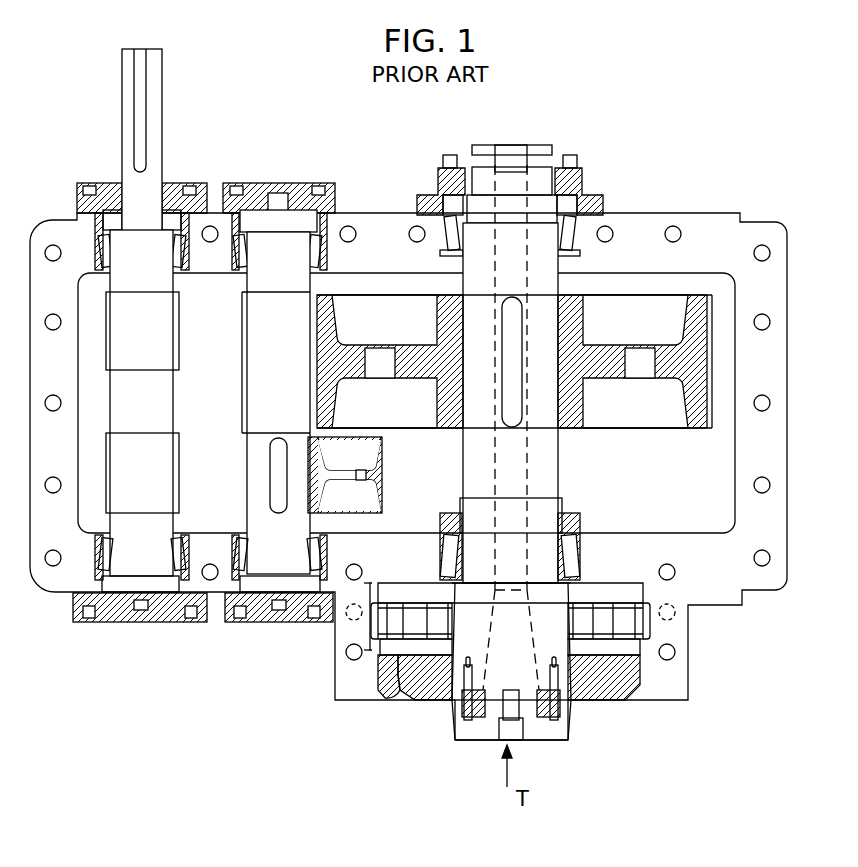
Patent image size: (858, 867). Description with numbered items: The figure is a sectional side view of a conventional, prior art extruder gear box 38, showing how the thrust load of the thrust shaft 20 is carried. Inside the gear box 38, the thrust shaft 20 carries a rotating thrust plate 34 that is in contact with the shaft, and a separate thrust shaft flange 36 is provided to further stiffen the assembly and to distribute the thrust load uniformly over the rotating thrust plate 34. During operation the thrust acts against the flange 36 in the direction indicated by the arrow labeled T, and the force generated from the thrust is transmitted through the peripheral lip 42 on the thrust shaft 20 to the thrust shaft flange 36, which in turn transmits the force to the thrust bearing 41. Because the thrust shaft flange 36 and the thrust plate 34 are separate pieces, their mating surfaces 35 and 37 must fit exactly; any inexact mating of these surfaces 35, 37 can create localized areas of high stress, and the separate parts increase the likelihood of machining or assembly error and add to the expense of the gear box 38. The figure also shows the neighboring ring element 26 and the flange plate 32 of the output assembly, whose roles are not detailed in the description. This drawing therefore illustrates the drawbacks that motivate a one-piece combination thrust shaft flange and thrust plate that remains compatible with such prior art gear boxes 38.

The thrust shaft 20 is at (576, 734).
The ring gear 26 is at (625, 624).
The flange plate 32 is at (610, 592).
The rotating thrust plate 34 is at (637, 648).
The thrust shaft flange mating surface 35 is at (390, 652).
The thrust shaft flange 36 is at (612, 683).
The thrust plate mating surface 37 is at (420, 690).
The gear box 38 is at (788, 366).
The thrust bearing 41 is at (368, 625).
The peripheral lip 42 is at (453, 700).